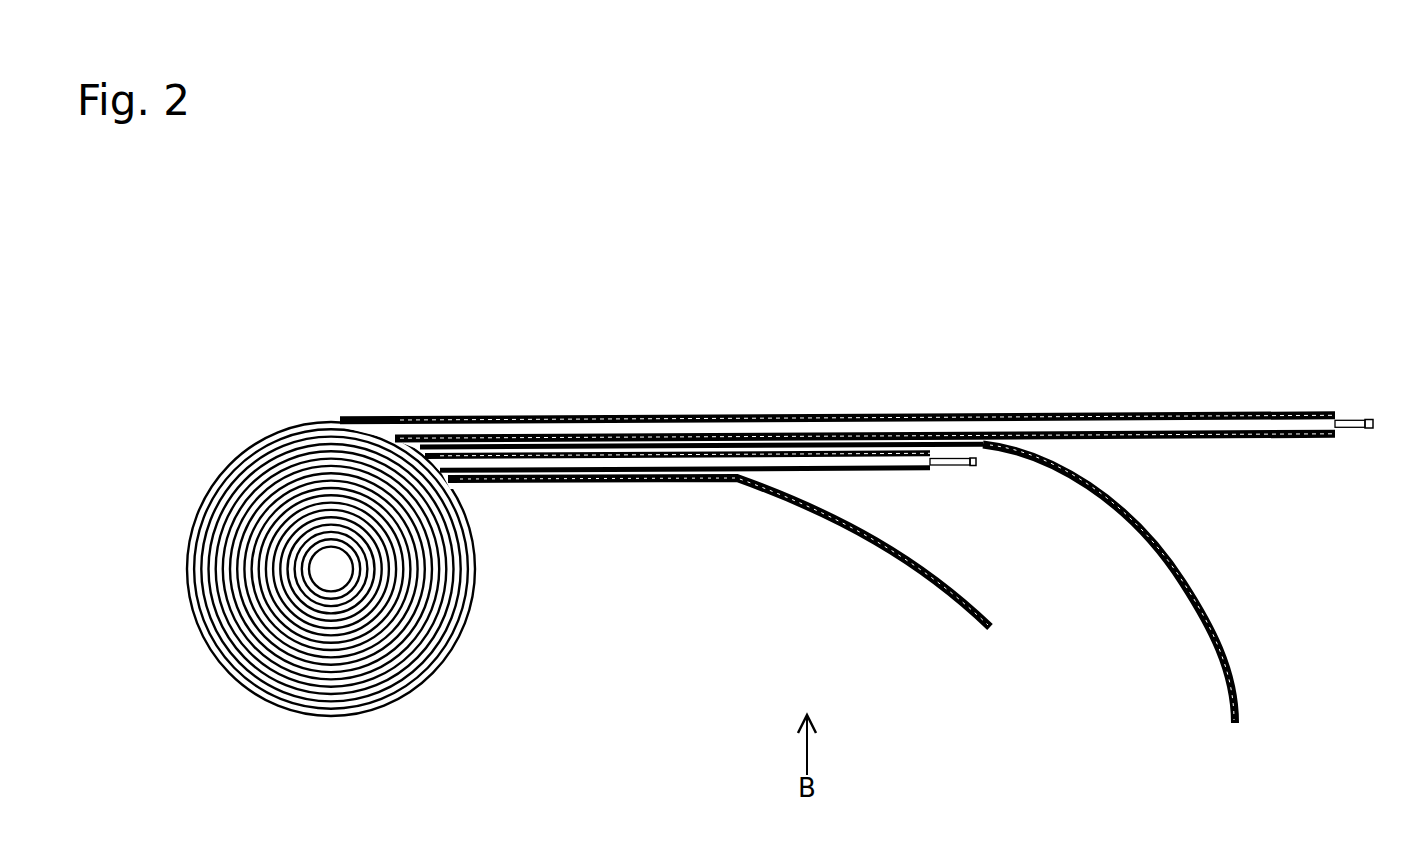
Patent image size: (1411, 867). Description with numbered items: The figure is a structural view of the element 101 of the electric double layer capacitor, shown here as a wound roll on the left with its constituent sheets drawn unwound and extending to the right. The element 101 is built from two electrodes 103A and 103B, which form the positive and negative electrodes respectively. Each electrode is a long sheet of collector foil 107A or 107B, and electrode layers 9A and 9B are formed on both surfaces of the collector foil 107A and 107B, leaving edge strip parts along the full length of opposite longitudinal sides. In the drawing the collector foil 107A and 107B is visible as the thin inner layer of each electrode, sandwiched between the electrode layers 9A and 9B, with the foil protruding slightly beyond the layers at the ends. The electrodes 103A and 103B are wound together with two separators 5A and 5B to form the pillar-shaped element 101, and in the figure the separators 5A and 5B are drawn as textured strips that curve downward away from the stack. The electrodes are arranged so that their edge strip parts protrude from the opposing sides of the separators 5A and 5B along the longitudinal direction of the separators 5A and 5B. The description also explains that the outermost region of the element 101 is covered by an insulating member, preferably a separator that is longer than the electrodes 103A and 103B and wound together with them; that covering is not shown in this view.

The element 101 is at (475, 420).
The electrode layer 9A is at (893, 472).
The electrode layer 9B is at (1259, 413).
The electrode 103A is at (946, 474).
The electrode 103B is at (1347, 440).
The collector foil 107A is at (975, 462).
The collector foil 107B is at (1368, 420).
The separator 5A is at (942, 576).
The separator 5B is at (1181, 578).